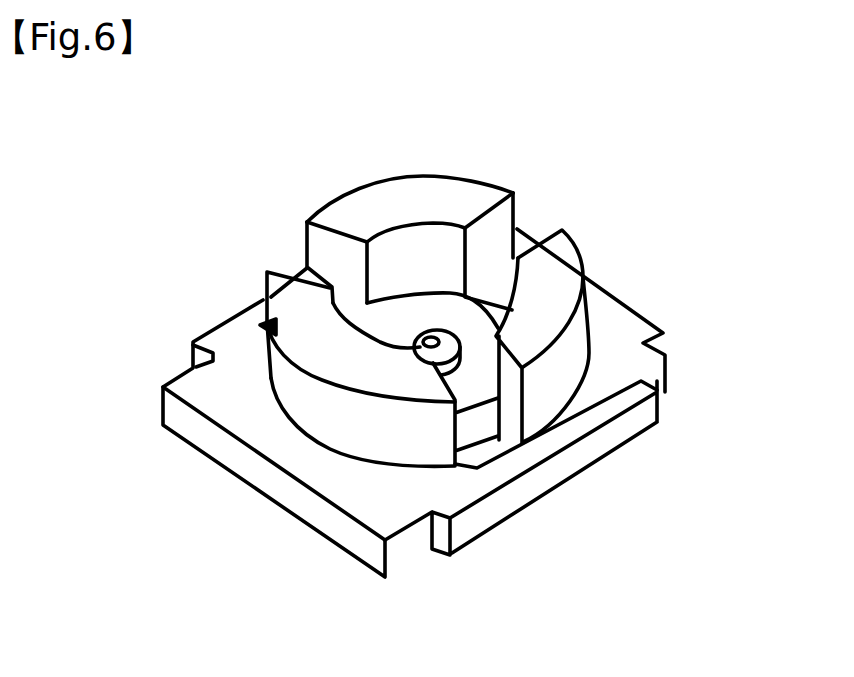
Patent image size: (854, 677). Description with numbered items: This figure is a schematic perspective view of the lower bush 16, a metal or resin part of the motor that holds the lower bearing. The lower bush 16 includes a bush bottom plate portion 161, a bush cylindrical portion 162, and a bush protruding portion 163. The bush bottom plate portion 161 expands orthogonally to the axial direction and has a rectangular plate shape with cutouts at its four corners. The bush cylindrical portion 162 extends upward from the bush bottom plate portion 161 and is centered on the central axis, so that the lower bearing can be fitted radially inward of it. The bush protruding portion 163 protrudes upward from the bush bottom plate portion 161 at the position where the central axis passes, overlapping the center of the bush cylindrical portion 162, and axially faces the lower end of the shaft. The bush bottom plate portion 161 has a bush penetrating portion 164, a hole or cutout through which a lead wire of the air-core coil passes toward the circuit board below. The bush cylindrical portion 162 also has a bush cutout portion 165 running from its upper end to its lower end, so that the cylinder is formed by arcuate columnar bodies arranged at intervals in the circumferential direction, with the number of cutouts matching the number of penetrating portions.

The lower bush 16 is at (628, 201).
The bush bottom plate portion 161 is at (253, 472).
The bush cylindrical portion 162 is at (278, 292).
The bush protruding portion 163 is at (458, 354).
The bush penetrating portion 164 is at (497, 448).
The bush cutout portion 165 is at (502, 225).